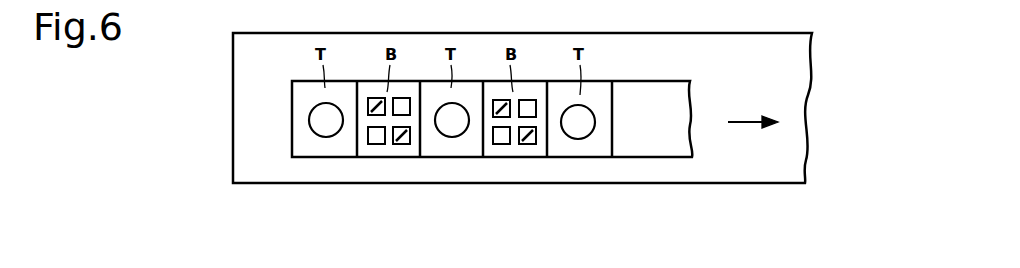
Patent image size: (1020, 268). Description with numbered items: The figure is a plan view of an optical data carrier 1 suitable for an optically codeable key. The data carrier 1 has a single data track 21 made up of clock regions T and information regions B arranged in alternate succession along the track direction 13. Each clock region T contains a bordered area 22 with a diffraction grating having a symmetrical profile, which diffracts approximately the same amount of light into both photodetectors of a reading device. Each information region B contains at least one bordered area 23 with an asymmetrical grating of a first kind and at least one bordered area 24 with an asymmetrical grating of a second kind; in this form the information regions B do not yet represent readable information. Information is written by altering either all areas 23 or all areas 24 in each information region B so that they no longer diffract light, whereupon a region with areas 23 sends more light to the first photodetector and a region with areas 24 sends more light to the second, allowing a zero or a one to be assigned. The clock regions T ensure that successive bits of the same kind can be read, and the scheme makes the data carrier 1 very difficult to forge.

The optical data carrier 1 is at (262, 172).
The track direction 13 is at (748, 118).
The data track 21 is at (650, 160).
The bordered area 22 is at (320, 143).
The bordered area 23 is at (377, 142).
The bordered area 24 is at (402, 143).